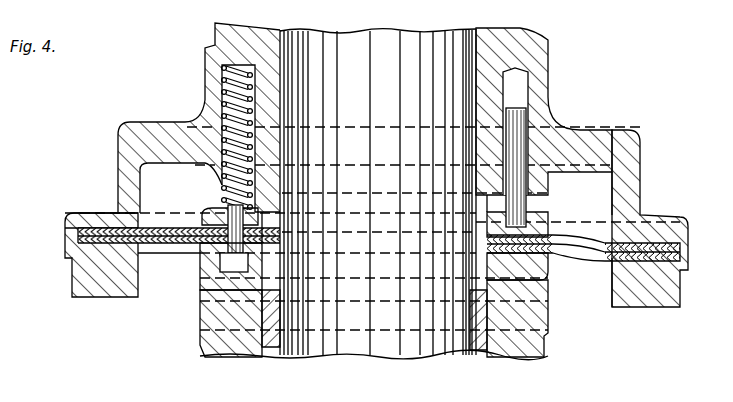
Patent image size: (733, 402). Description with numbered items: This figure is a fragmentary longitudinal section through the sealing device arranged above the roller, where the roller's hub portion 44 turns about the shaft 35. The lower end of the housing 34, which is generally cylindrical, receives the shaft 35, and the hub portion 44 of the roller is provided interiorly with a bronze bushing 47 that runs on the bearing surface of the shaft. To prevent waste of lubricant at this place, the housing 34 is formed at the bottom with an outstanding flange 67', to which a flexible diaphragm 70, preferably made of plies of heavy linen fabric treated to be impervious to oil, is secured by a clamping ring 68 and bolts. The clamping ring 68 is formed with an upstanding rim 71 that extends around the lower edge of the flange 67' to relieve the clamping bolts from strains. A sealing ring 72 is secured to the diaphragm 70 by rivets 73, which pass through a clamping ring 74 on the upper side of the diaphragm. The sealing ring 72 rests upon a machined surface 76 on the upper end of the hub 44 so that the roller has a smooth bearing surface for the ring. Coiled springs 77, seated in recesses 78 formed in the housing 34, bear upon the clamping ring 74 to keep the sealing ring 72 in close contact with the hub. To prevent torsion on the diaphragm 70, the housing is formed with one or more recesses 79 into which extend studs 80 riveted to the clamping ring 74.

The housing 34 is at (243, 38).
The shaft 35 is at (433, 30).
The hub portion 44 is at (203, 347).
The bronze bushing 47 is at (263, 347).
The outstanding flange 67' is at (160, 152).
The flange 68 is at (110, 287).
The flexible diaphragm 70 is at (155, 243).
The upstanding rim 71 is at (68, 222).
The sealing ring 72 is at (205, 265).
The rivets 73 is at (207, 215).
The clamping ring 74 is at (215, 208).
The machined surface 76 is at (510, 282).
The coiled springs 77 is at (222, 131).
The recesses 78 is at (222, 100).
The recesses 79 is at (510, 100).
The studs 80 is at (517, 148).